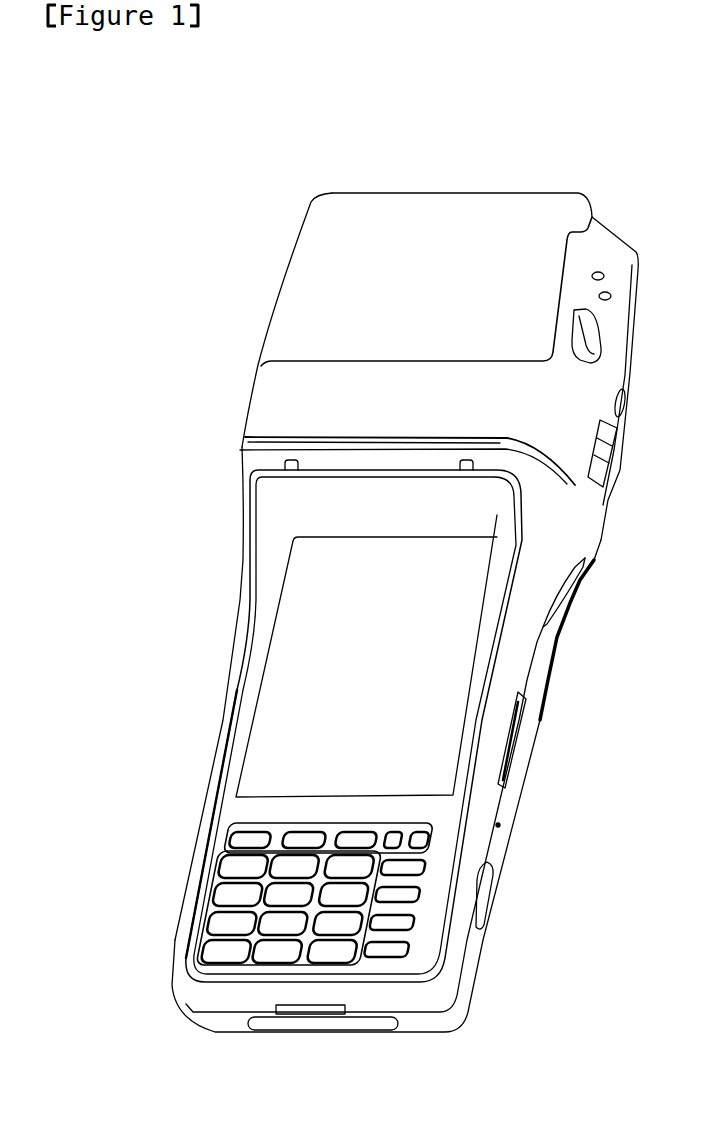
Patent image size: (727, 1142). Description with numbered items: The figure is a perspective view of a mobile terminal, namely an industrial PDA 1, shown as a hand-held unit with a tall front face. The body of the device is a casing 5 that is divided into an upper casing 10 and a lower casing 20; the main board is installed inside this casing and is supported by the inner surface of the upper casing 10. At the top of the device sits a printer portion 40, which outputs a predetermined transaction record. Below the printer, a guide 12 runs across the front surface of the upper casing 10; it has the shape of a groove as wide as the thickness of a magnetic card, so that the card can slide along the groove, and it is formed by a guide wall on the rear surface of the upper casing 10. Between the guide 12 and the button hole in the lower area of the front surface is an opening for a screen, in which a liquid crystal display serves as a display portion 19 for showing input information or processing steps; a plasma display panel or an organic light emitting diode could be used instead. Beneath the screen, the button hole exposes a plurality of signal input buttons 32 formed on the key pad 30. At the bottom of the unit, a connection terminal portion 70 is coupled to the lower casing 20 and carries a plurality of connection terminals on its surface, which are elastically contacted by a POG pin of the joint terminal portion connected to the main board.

The industrial PDA 1 is at (177, 199).
The casing 5 is at (607, 678).
The upper casing 10 is at (507, 674).
The guide 12 is at (234, 436).
The display portion 19 is at (280, 695).
The lower casing 20 is at (527, 722).
The key pad 30 is at (190, 930).
The signal input button 32 is at (243, 868).
The printer portion 40 is at (425, 212).
The connection terminal portion 70 is at (345, 1038).